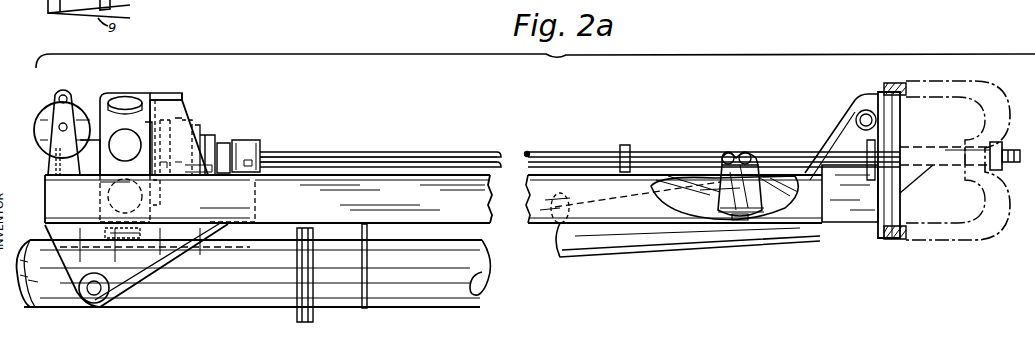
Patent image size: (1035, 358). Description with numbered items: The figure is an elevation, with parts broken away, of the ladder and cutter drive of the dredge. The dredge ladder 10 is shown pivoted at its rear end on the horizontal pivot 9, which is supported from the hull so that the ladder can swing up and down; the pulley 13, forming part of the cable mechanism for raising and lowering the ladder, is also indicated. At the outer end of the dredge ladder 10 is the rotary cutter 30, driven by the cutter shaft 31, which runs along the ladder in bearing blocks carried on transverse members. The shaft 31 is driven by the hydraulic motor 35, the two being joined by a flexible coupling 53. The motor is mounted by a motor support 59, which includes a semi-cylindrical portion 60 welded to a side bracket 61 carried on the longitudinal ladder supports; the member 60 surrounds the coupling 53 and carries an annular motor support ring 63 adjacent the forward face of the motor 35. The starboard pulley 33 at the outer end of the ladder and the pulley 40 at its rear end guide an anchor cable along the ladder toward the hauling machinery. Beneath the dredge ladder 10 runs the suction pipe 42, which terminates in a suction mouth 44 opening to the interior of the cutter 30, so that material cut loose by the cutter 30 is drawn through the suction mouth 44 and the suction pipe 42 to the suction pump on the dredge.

The horizontal pivot 9 is at (94, 288).
The dredge ladder 10 is at (537, 228).
The pulley 13 is at (34, 293).
The rotary cutter 30 is at (955, 241).
The cutter shaft 31 is at (370, 151).
The starboard pulley 33 is at (715, 224).
The hydraulic motor 35 is at (124, 100).
The pulley 40 is at (44, 124).
The suction pipe 42 is at (447, 298).
The suction mouth 44 is at (805, 232).
The flexible coupling 53 is at (205, 130).
The motor support 59 is at (190, 110).
The semi-cylindrical portion 60 is at (175, 103).
The side bracket 61 is at (162, 178).
The annular motor support ring 63 is at (158, 95).